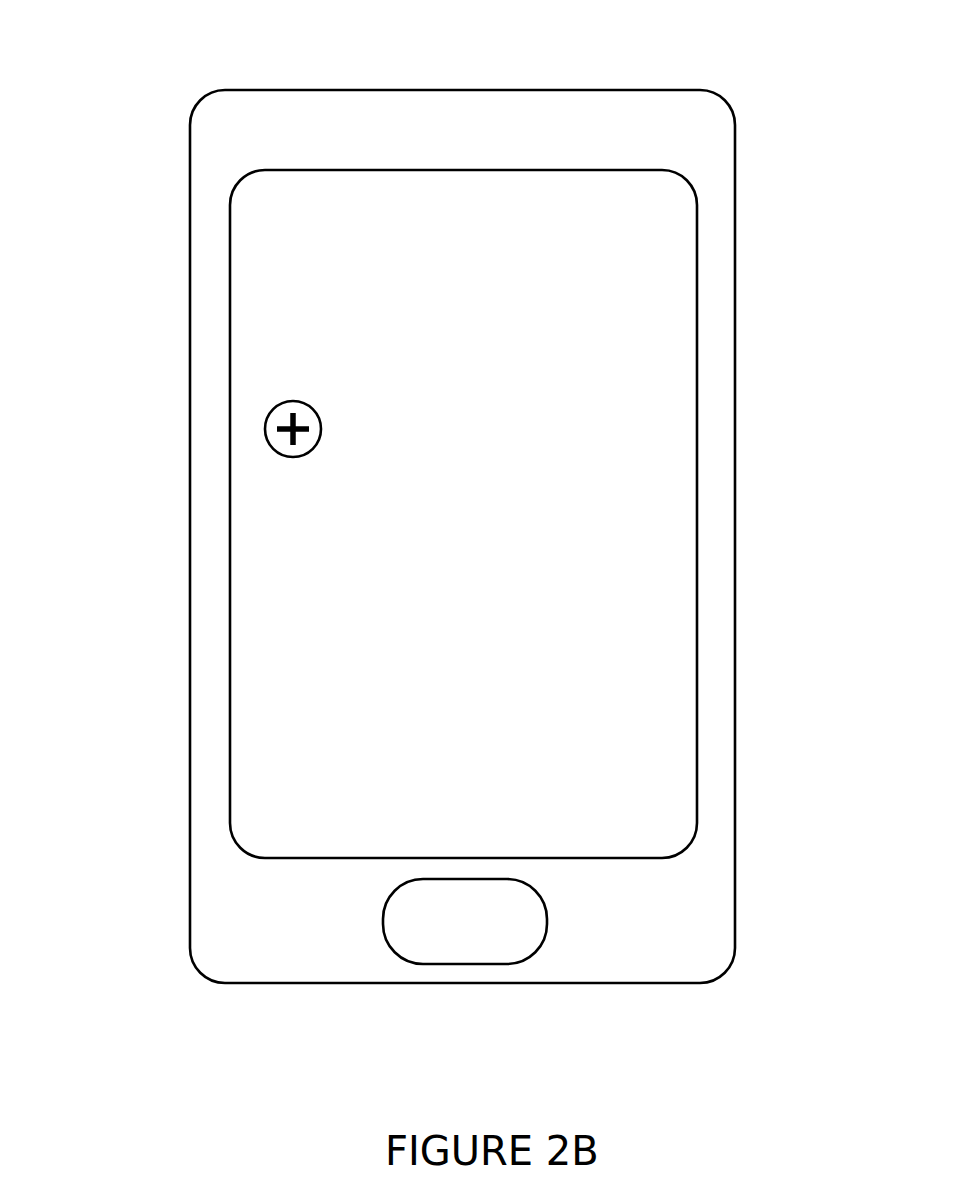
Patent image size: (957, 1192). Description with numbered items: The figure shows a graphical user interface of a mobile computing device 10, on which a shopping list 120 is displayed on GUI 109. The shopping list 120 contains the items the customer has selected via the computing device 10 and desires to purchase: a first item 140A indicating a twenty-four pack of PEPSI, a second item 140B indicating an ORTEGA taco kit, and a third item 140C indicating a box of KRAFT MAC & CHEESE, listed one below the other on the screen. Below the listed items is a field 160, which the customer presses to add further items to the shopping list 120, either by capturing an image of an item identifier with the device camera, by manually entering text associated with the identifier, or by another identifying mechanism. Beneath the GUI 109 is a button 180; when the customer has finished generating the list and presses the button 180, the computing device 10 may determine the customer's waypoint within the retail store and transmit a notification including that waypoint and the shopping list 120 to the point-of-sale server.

The computing device 10 is at (734, 400).
The GUI 109 is at (696, 663).
The shopping list 120 is at (426, 203).
The first item 140A is at (245, 240).
The second item 140B is at (245, 300).
The third item 140C is at (245, 360).
The field 160 is at (265, 438).
The button 180 is at (398, 935).